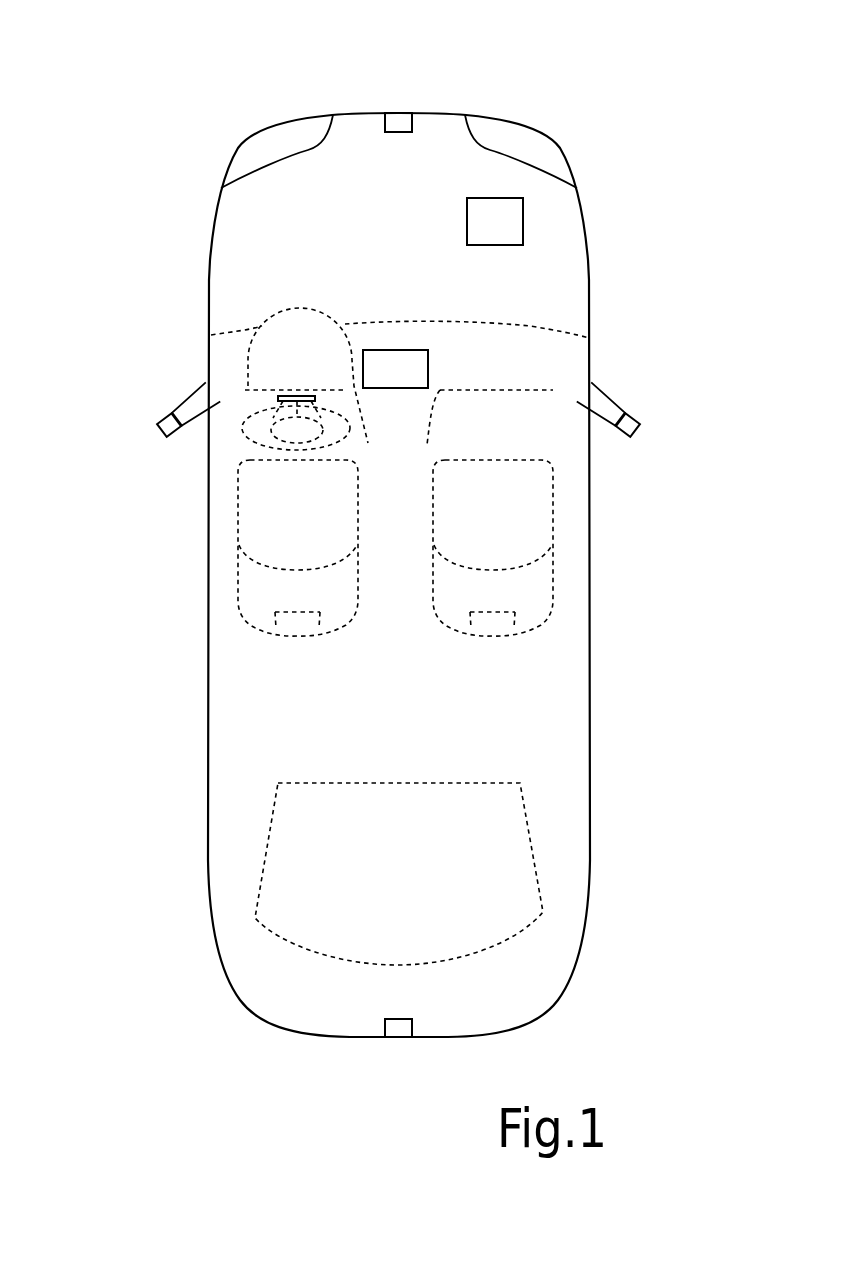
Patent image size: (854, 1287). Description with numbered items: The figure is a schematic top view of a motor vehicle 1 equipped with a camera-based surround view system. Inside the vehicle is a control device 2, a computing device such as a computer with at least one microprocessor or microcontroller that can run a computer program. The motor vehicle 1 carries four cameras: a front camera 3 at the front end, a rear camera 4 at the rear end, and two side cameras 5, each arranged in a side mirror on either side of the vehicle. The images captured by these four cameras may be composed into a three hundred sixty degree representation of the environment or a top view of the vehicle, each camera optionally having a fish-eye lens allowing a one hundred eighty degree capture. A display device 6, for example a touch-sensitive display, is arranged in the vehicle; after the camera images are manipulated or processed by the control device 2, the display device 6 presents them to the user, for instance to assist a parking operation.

The motor vehicle 1 is at (565, 653).
The control device 2 is at (523, 222).
The front camera 3 is at (391, 100).
The rear camera 4 is at (389, 1049).
The side camera 5 is at (397, 446).
The display device 6 is at (392, 360).